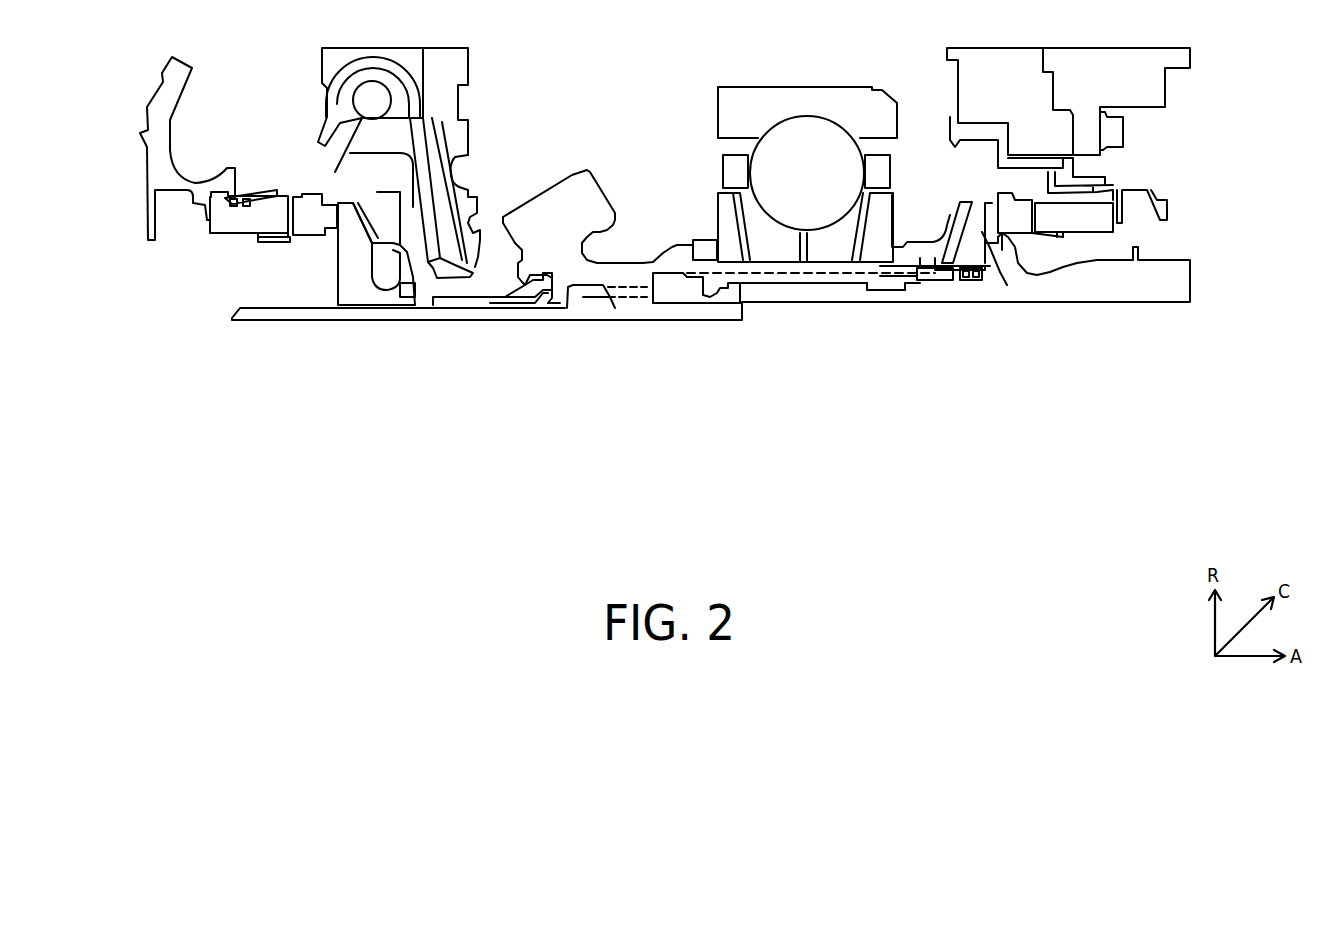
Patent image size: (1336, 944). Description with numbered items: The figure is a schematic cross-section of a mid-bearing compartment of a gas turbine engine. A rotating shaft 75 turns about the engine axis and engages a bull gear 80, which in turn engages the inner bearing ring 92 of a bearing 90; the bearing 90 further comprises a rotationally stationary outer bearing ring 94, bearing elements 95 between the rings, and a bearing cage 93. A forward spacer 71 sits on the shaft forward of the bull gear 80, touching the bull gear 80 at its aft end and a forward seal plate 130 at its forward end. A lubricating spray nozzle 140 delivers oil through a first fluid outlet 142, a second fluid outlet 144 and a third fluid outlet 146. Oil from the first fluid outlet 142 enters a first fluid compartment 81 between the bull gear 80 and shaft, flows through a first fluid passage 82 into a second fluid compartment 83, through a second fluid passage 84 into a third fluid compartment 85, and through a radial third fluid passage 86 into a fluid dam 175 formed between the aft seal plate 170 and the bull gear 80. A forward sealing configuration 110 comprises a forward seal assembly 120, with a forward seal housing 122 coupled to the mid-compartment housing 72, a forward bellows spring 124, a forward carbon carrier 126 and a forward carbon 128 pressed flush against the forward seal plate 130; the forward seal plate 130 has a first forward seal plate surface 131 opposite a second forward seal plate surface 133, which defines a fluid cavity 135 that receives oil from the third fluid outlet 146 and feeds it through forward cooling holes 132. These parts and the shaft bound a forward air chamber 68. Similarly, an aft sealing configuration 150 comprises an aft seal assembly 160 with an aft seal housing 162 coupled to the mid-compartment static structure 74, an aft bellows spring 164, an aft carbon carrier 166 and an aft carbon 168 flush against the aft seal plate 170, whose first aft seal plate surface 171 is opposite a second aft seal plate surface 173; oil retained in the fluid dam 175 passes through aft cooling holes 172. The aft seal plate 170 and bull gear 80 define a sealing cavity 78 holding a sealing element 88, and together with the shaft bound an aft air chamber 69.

The forward air chamber 68 is at (317, 287).
The aft air chamber 69 is at (1050, 266).
The forward spacer 71 is at (537, 303).
The mid-compartment housing 72 is at (155, 168).
The mid-compartment static structure 74 is at (956, 133).
The rotating shaft 75 is at (1153, 282).
The sealing cavity 78 is at (983, 278).
The bull gear 80 is at (575, 178).
The first fluid compartment 81 is at (578, 301).
The first fluid passage 82 is at (630, 297).
The second fluid compartment 83 is at (693, 300).
The second fluid passage 84 is at (805, 290).
The third fluid compartment 85 is at (910, 292).
The third fluid passage 86 is at (920, 282).
The sealing element 88 is at (970, 282).
The bearing 90 is at (882, 78).
The inner bearing ring 92 is at (723, 233).
The bearing cage 93 is at (730, 172).
The outer bearing ring 94 is at (765, 92).
The bearing element 95 is at (808, 128).
The forward sealing configuration 110 is at (283, 147).
The forward seal assembly 120 is at (240, 246).
The forward seal housing 122 is at (210, 222).
The forward bellows spring 124 is at (251, 214).
The forward carbon carrier 126 is at (290, 240).
The forward carbon 128 is at (308, 197).
The forward seal plate 130 is at (357, 300).
The first forward seal plate surface 131 is at (338, 283).
The forward cooling hole 132 is at (363, 218).
The second forward seal plate surface 133 is at (416, 290).
The fluid cavity 135 is at (388, 273).
The lubricating spray nozzle 140 is at (495, 100).
The first fluid outlet 142 is at (473, 285).
The second fluid outlet 144 is at (485, 196).
The third fluid outlet 146 is at (432, 278).
The aft sealing configuration 150 is at (978, 180).
The aft seal assembly 160 is at (1140, 219).
The aft seal housing 162 is at (1100, 197).
The aft bellows spring 164 is at (1100, 224).
The aft carbon carrier 166 is at (1058, 238).
The aft carbon 168 is at (990, 210).
The aft seal plate 170 is at (990, 280).
The first aft seal plate surface 171 is at (957, 213).
The aft cooling hole 172 is at (960, 244).
The second aft seal plate surface 173 is at (1000, 250).
The fluid dam 175 is at (928, 274).